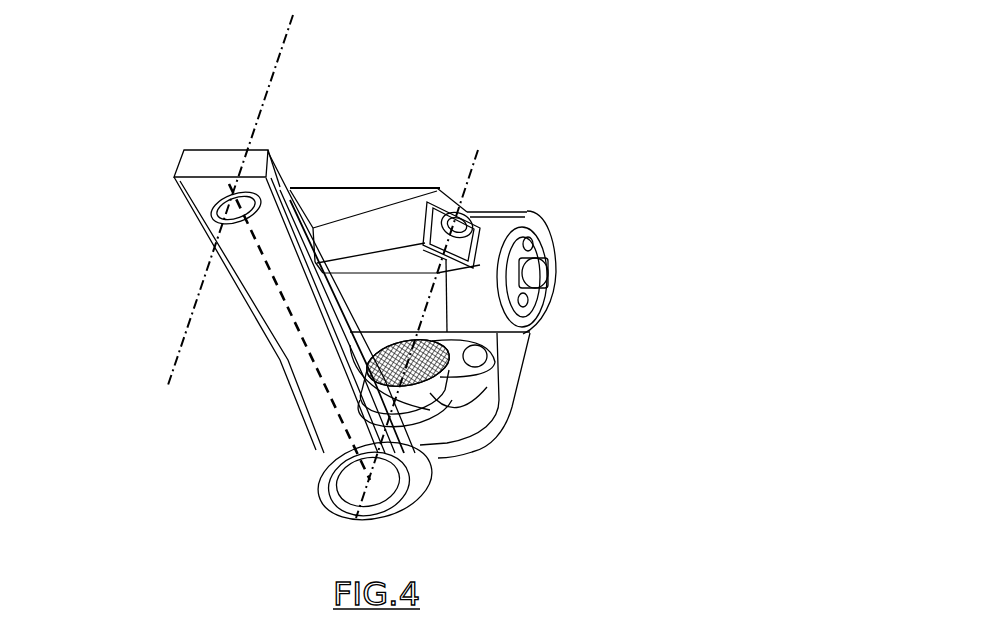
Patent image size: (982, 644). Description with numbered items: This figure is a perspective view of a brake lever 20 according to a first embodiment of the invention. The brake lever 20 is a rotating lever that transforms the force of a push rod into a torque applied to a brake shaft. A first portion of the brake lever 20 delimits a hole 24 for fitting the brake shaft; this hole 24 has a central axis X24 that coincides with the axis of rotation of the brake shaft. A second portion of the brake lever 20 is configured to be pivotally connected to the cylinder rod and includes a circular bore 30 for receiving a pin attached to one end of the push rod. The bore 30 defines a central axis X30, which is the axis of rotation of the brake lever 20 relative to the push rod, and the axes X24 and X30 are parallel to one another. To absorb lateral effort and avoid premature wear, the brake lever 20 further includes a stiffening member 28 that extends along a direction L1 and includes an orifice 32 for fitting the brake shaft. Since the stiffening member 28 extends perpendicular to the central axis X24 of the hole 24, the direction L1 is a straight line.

The brake lever 20 is at (608, 119).
The hole 24 is at (430, 378).
The stiffening member 28 is at (300, 378).
The circular bore 30 is at (240, 208).
The orifice 32 is at (385, 487).
The central axis of bore 30 X30 is at (250, 200).
The central axis of hole 24 X24 is at (454, 334).
The direction of the stiffening member L1 is at (288, 303).